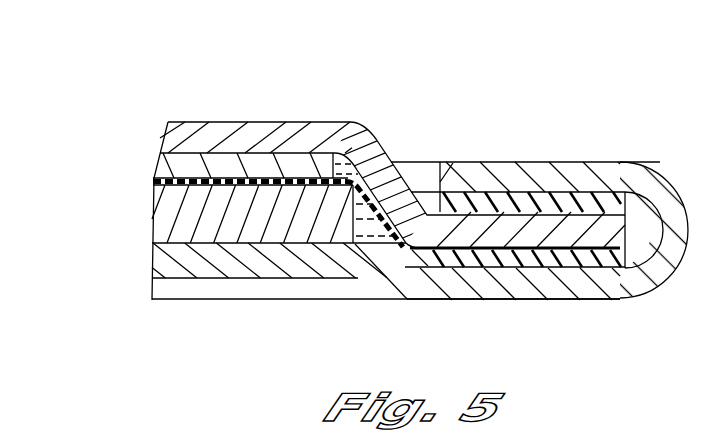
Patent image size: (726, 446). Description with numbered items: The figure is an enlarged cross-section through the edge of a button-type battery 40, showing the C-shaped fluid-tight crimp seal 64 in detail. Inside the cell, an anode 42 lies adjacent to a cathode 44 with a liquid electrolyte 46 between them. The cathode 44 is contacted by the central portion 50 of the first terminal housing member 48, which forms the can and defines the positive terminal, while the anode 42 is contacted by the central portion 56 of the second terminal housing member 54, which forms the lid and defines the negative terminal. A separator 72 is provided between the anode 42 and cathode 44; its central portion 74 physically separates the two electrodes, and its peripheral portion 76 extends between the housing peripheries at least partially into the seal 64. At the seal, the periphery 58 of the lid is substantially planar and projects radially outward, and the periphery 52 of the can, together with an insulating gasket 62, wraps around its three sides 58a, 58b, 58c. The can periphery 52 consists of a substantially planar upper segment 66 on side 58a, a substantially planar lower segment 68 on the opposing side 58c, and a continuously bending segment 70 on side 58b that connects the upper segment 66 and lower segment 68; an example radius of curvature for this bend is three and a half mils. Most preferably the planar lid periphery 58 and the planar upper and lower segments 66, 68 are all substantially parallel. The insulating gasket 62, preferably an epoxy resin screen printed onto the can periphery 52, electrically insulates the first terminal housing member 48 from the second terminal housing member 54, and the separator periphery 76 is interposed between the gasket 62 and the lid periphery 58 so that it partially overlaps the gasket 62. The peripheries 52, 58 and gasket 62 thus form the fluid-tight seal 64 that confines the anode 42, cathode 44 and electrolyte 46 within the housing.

The button-type battery 40 is at (354, 96).
The anode 42 is at (264, 165).
The cathode 44 is at (157, 220).
The liquid electrolyte 46 is at (385, 250).
The first terminal housing member 48 is at (468, 308).
The central portion 50 is at (163, 268).
The periphery 52 is at (538, 278).
The second terminal housing member 54 is at (390, 128).
The central portion 56 is at (214, 134).
The periphery 58 is at (472, 218).
The side 58a is at (531, 198).
The side 58b is at (636, 264).
The side 58c is at (578, 258).
The insulating gasket 62 is at (644, 208).
The fluid-tight seal 64 is at (664, 146).
The upper segment 66 is at (452, 172).
The lower segment 68 is at (483, 283).
The continuously bending segment 70 is at (673, 212).
The separator 72 is at (322, 160).
The central portion 74 is at (157, 182).
The peripheral portion 76 is at (425, 252).